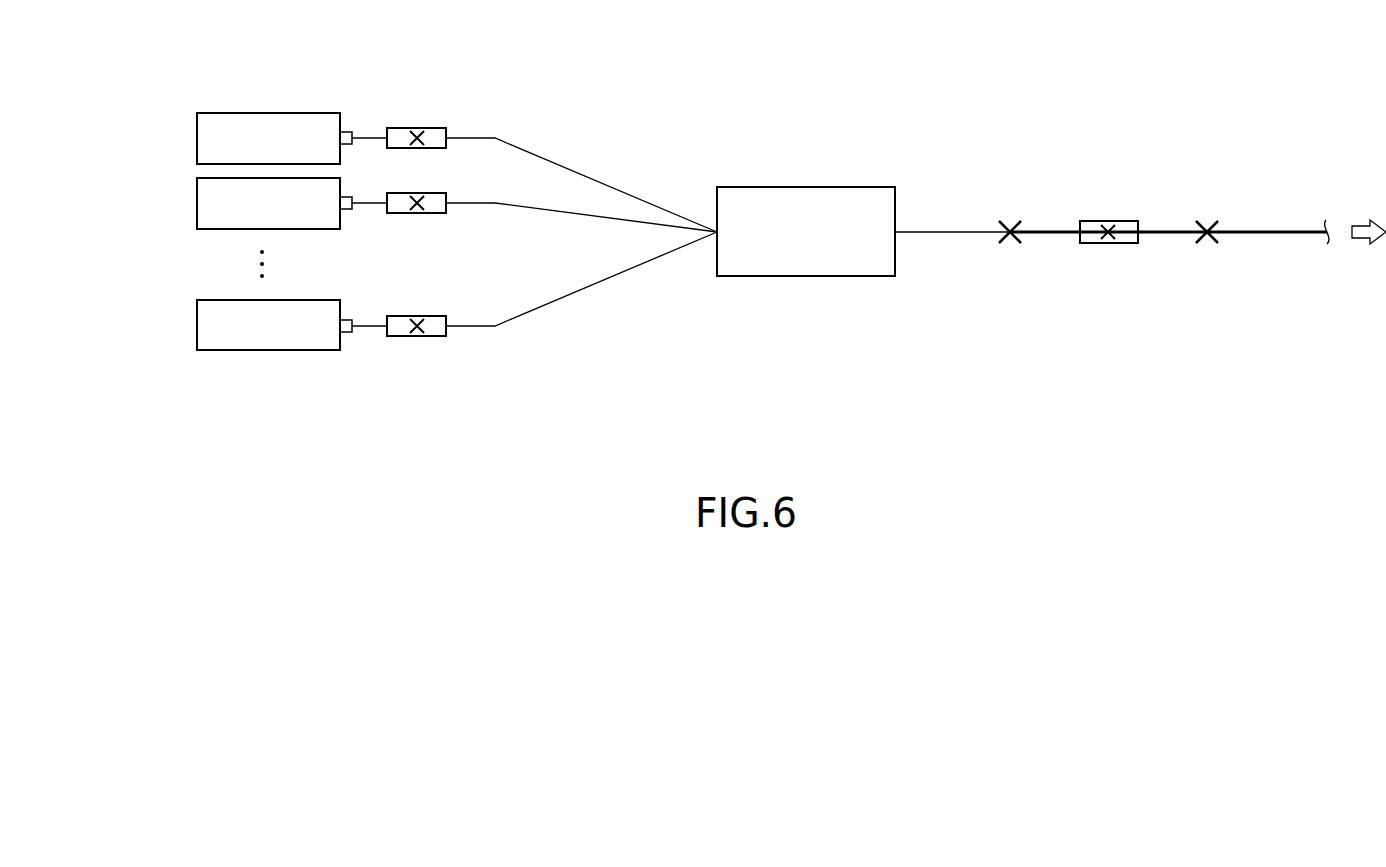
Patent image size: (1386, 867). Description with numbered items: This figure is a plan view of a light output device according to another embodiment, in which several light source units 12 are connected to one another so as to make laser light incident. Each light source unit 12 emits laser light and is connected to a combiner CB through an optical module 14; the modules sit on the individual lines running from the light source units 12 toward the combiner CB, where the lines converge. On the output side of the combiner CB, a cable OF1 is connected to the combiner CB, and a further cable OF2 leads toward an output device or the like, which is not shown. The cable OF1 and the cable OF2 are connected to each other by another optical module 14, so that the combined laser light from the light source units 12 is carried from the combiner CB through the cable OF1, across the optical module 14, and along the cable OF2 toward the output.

The light source unit 12 is at (197, 320).
The optical module 14 is at (437, 112).
The combiner CB is at (788, 186).
The cable OF1 is at (933, 234).
The cable OF2 is at (1268, 234).